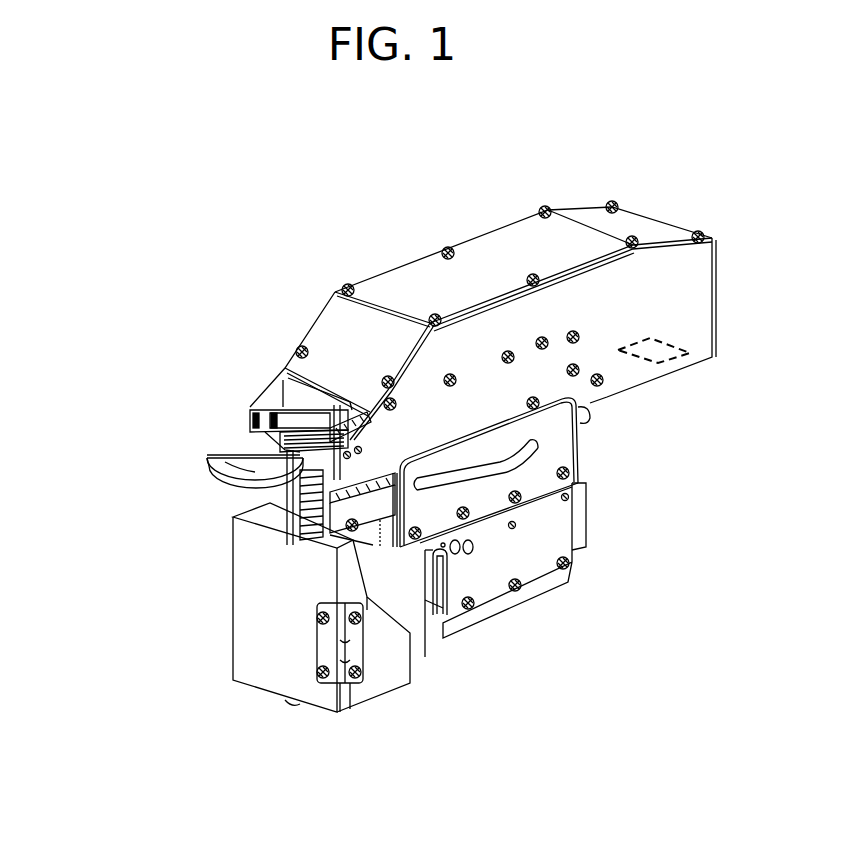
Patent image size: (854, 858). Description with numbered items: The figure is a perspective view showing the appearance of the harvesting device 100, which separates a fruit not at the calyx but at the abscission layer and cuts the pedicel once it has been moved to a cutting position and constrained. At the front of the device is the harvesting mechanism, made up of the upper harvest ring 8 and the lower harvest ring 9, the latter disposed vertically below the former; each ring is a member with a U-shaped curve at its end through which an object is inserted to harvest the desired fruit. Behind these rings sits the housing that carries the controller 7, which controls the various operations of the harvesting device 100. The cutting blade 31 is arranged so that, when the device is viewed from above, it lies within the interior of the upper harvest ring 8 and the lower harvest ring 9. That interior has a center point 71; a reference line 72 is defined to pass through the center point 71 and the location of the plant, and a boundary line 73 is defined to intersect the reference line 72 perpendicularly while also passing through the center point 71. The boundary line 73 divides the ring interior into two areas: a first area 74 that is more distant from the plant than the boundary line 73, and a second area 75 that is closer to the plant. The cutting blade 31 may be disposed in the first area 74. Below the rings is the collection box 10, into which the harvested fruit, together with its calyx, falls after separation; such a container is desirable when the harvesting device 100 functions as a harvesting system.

The controller 7 is at (672, 360).
The upper harvest ring 8 is at (207, 462).
The lower harvest ring 9 is at (208, 475).
The collection box 10 is at (270, 588).
The cutting blade 31 is at (323, 450).
The center point 71 is at (233, 460).
The reference line 72 is at (300, 462).
The boundary line 73 is at (300, 472).
The first area 74 is at (285, 467).
The second area 75 is at (233, 464).
The harvesting device 100 is at (88, 425).